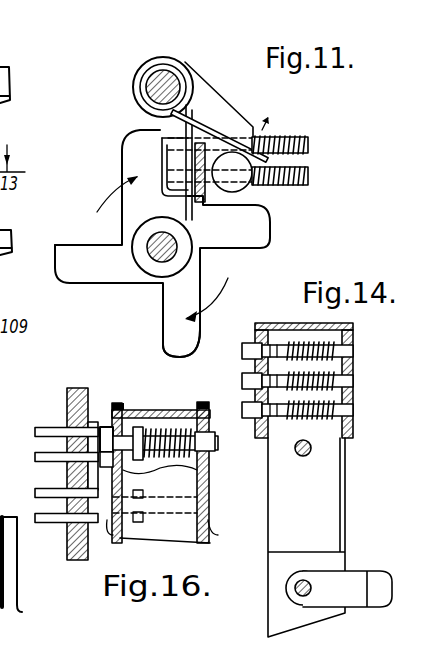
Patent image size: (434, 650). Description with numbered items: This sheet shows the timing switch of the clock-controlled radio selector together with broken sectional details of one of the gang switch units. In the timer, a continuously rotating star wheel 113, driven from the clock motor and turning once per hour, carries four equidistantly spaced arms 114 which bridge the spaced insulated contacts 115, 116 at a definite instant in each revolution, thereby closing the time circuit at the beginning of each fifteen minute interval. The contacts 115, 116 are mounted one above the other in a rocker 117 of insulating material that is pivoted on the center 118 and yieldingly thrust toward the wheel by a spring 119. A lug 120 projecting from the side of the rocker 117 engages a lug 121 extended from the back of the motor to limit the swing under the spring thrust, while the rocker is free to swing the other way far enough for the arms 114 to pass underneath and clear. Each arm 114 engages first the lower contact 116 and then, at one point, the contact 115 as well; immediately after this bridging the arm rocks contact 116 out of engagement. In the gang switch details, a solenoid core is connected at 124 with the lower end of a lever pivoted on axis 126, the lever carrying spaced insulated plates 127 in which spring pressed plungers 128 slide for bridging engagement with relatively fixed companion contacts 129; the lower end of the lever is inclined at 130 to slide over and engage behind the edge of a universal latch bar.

In FIG. 11, the star wheel 113 is at (128, 284).
In FIG. 11, the arms 114 is at (162, 333).
In FIG. 11, the contact 115 is at (160, 142).
In FIG. 11, the contact 116 is at (162, 175).
In FIG. 11, the rocker 117 is at (203, 85).
In FIG. 11, the center 118 is at (152, 70).
In FIG. 11, the spring 119 is at (216, 118).
In FIG. 11, the lug 120 is at (248, 192).
In FIG. 11, the lug 121 is at (205, 202).
In FIG. 14, the connection 124 is at (355, 598).
In FIG. 14, the axis 126 is at (301, 457).
In FIG. 14, the insulated plates 127 is at (258, 438).
In FIG. 16, the insulated plates 127 is at (208, 543).
In FIG. 14, the spring pressed plungers 128 is at (243, 354).
In FIG. 16, the spring pressed plungers 128 is at (205, 452).
In FIG. 16, the companion contacts 129 is at (65, 433).
In FIG. 14, the inclined lower end 130 is at (268, 633).